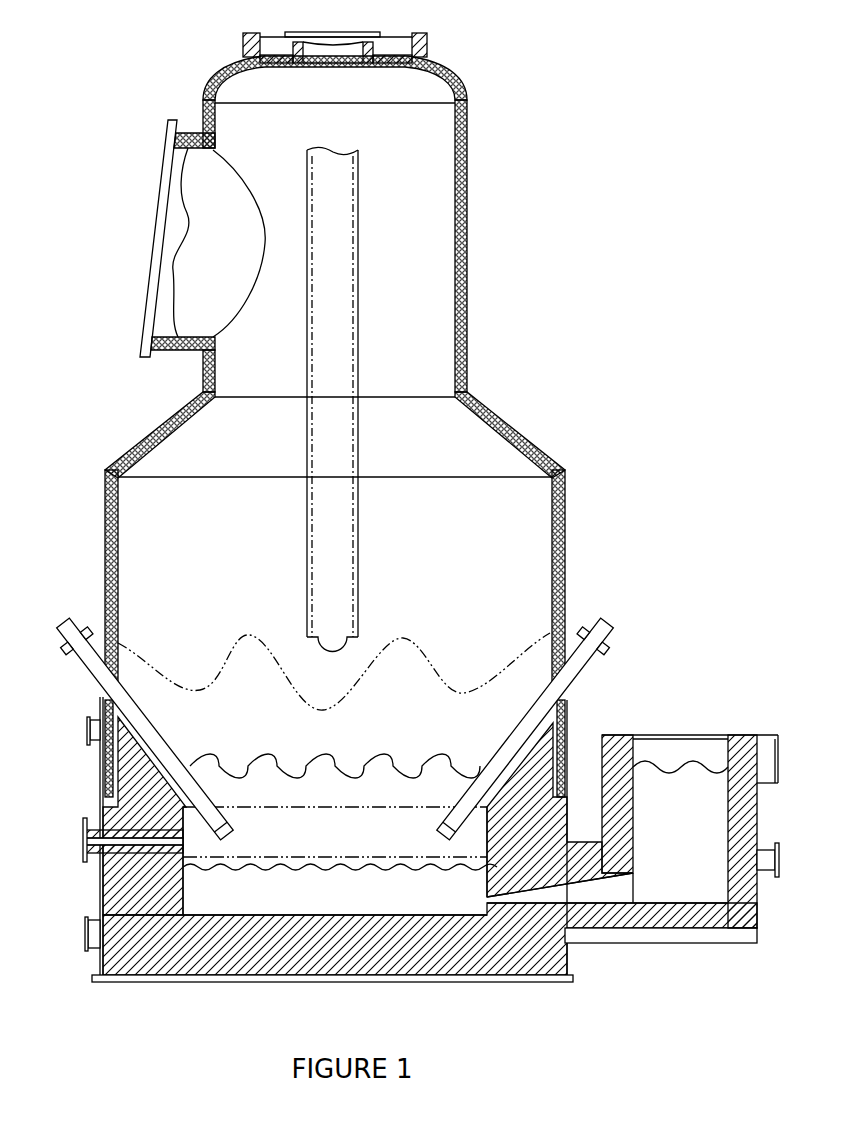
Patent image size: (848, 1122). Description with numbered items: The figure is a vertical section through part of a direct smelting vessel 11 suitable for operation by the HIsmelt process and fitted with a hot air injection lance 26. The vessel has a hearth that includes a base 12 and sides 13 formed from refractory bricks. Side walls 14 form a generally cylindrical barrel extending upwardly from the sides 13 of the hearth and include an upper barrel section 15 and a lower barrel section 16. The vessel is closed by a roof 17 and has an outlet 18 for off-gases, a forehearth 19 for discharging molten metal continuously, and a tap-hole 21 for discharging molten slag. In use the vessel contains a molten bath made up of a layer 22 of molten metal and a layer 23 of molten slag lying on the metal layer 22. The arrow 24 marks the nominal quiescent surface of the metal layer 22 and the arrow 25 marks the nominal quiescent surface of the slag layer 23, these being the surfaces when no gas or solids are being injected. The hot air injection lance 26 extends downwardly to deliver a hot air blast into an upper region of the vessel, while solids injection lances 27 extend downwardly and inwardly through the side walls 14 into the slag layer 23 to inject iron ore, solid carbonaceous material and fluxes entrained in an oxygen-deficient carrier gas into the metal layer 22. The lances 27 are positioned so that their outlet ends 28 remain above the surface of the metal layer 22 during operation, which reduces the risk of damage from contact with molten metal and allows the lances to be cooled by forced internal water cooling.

The metallurgical vessel 11 is at (104, 462).
The base 12 is at (198, 950).
The sides 13 is at (130, 905).
The side walls 14 is at (96, 762).
The upper barrel section 15 is at (106, 500).
The lower barrel section 16 is at (104, 806).
The roof 17 is at (168, 420).
The outlet 18 is at (150, 316).
The forehearth 19 is at (684, 830).
The tap-hole 21 is at (86, 846).
The layer of molten metal 22 is at (352, 911).
The layer of molten slag 23 is at (304, 844).
The nominal quiescent surface of the metal layer 24 is at (340, 850).
The nominal quiescent surface of the slag layer 25 is at (378, 800).
The hot air injection lance 26 is at (348, 497).
The solids injection lances 27 is at (60, 616).
The outlet ends 28 is at (221, 832).